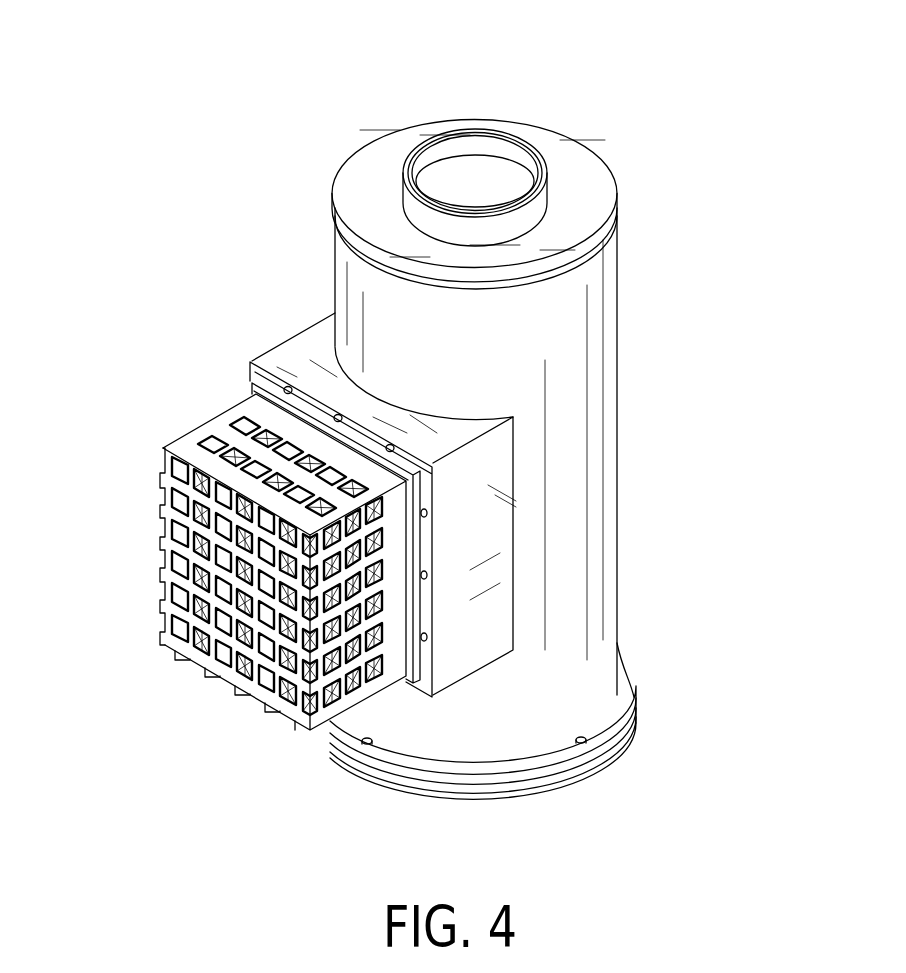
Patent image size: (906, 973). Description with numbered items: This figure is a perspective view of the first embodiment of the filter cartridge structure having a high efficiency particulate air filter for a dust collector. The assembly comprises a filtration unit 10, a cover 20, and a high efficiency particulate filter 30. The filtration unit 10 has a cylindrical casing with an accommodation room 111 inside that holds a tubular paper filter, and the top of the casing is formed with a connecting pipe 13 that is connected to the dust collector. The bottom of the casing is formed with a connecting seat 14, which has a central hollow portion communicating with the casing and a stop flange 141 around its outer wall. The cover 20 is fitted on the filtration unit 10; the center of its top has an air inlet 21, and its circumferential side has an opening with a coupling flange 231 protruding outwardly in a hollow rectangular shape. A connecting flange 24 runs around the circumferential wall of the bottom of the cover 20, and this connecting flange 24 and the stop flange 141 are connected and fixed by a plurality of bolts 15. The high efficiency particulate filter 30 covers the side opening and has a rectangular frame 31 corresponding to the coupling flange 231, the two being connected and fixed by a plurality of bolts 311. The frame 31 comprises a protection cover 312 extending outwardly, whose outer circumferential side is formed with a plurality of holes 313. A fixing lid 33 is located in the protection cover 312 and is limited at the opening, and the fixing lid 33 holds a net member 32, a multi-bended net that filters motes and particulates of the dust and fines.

The filtration unit 10 is at (409, 160).
The accommodation room 111 is at (458, 180).
The connecting pipe 13 is at (493, 157).
The air inlet 21 is at (530, 150).
The cover 20 is at (606, 162).
The coupling flange 231 is at (323, 340).
The connecting flange 24 is at (623, 665).
The connecting seat 14 is at (543, 787).
The stop flange 141 is at (630, 725).
The bolts 15 is at (353, 737).
The frame 31 is at (260, 382).
The bolts 311 is at (288, 390).
The high efficiency particulate filter 30 is at (222, 539).
The protection cover 312 is at (162, 455).
The holes 313 is at (203, 447).
The net member 32 is at (172, 568).
The fixing lid 33 is at (293, 691).